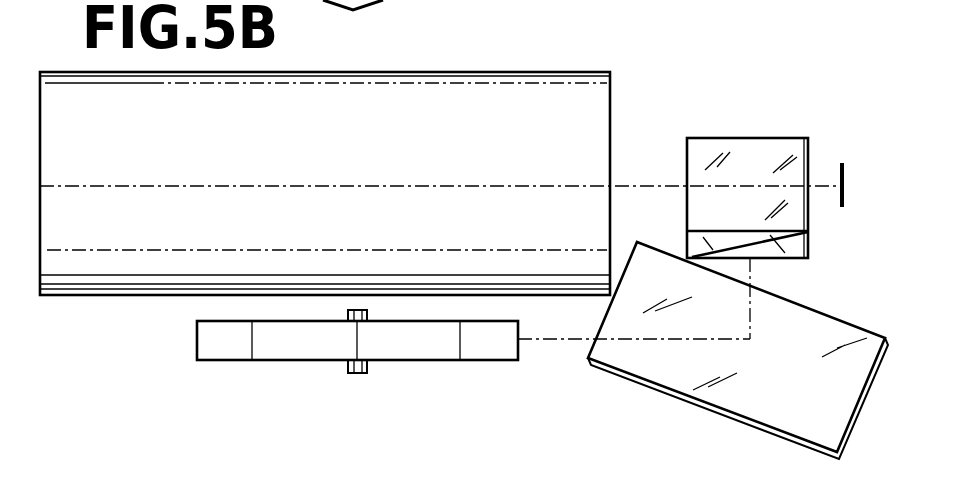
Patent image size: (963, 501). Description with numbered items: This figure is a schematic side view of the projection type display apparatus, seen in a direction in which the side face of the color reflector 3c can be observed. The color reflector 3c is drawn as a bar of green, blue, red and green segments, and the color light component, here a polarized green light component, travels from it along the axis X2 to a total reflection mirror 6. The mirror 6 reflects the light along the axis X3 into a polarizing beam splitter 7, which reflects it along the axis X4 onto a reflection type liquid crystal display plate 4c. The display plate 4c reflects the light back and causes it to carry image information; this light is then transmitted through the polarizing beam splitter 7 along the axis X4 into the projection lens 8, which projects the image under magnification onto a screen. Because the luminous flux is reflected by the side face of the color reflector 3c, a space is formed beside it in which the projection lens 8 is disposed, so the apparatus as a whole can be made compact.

The projection lens 8 is at (530, 93).
The polarizing beam splitter 7 is at (760, 138).
The reflection type liquid crystal display plate 4c is at (839, 163).
The total reflection mirror 6 is at (662, 366).
The color reflector 3c is at (197, 341).
The optical axis X2 is at (566, 341).
The optical axis X3 is at (752, 280).
The optical axis X4 is at (652, 185).